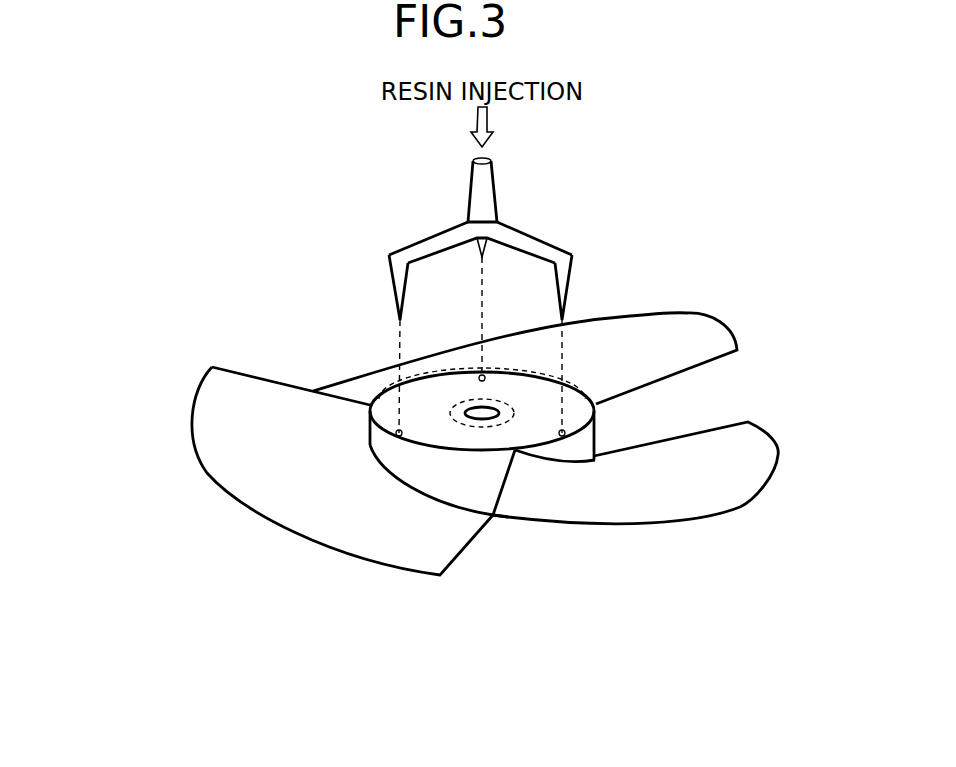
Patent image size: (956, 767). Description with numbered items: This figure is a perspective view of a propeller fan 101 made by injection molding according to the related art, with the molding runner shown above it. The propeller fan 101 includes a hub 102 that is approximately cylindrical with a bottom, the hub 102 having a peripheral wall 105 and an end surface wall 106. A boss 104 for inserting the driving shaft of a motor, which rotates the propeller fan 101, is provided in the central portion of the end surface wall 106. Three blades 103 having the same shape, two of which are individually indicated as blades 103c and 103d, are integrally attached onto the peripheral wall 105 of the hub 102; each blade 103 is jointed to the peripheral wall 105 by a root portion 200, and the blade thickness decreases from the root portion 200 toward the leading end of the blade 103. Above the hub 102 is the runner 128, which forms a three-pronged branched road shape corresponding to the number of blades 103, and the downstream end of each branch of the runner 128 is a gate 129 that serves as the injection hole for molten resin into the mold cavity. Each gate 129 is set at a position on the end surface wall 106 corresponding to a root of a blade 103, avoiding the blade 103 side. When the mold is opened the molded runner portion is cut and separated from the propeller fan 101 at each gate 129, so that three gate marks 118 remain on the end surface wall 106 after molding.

The propeller fan 101 is at (455, 453).
The hub 102 is at (468, 489).
The blade 103 is at (485, 443).
The blade 103c is at (467, 548).
The blade 103d is at (260, 375).
The boss 104 is at (458, 405).
The peripheral wall 105 is at (490, 482).
The end surface wall 106 is at (422, 435).
The gate mark 118 is at (483, 340).
The runner 128 is at (522, 230).
The gate 129 is at (562, 287).
The root portion 200 is at (385, 452).